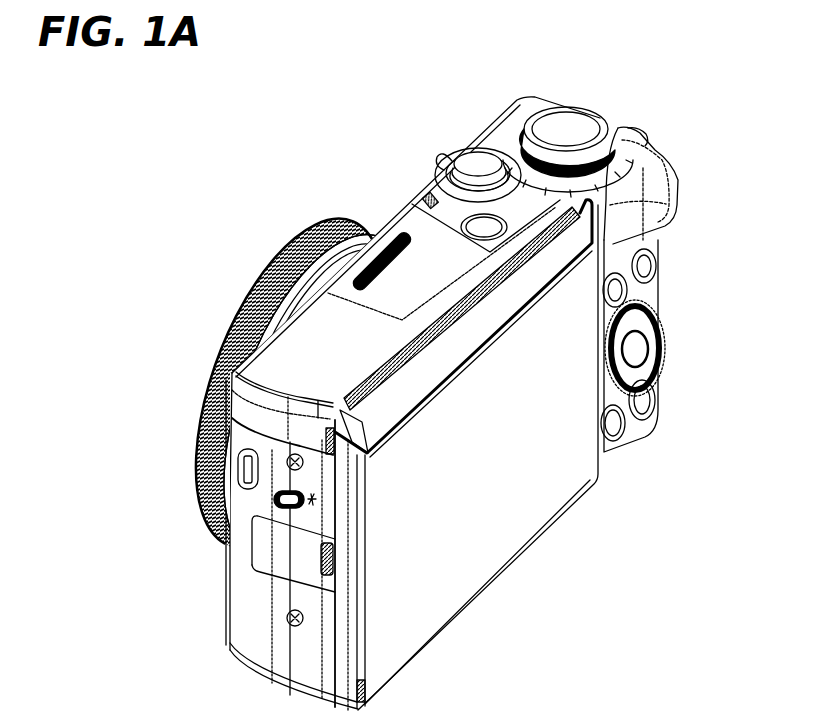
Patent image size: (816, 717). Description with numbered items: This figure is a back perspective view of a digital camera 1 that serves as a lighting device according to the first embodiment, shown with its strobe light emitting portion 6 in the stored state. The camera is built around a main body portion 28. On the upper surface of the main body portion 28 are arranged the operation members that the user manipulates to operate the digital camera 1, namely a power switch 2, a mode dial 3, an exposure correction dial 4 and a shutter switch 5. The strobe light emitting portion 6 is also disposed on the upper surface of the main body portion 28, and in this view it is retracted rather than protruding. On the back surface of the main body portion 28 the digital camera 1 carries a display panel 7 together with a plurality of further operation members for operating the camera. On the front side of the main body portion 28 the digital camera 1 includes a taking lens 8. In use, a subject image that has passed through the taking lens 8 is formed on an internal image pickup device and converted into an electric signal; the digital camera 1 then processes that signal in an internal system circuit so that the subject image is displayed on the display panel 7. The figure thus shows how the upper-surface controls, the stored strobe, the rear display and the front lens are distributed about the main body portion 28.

The digital camera 1 is at (278, 133).
The power switch 2 is at (478, 224).
The mode dial 3 is at (593, 116).
The exposure correction dial 4 is at (640, 137).
The shutter switch 5 is at (468, 157).
The strobe light emitting portion 6 is at (328, 300).
The display panel 7 is at (548, 495).
The taking lens 8 is at (225, 321).
The main body portion 28 is at (396, 217).